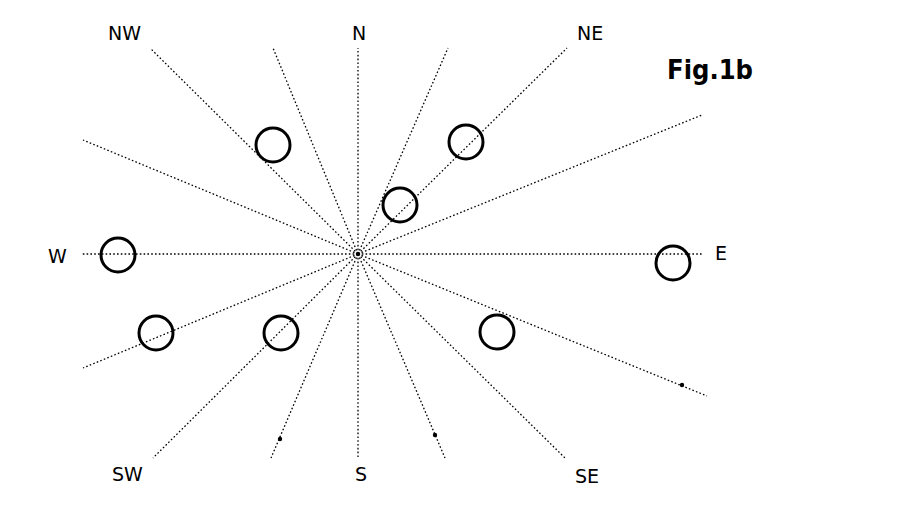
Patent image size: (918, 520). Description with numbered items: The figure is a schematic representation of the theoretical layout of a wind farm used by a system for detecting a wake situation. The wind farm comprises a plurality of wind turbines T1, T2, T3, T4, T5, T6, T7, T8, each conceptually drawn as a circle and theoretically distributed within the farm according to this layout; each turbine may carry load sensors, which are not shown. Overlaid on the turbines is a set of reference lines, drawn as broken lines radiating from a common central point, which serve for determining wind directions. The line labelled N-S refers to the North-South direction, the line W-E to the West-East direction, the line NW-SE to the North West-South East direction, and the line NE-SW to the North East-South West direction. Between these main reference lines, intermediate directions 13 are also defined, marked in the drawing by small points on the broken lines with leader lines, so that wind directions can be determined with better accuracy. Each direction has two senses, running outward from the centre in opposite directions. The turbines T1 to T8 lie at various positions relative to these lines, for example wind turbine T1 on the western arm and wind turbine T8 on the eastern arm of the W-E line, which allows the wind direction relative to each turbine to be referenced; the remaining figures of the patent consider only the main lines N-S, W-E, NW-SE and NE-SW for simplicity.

The intermediate directions 13 is at (280, 439).
The wind turbine T1 is at (129, 262).
The wind turbine T2 is at (145, 341).
The wind turbine T3 is at (277, 346).
The wind turbine T4 is at (273, 133).
The wind turbine T5 is at (414, 208).
The wind turbine T6 is at (478, 139).
The wind turbine T7 is at (510, 338).
The wind turbine T8 is at (675, 252).